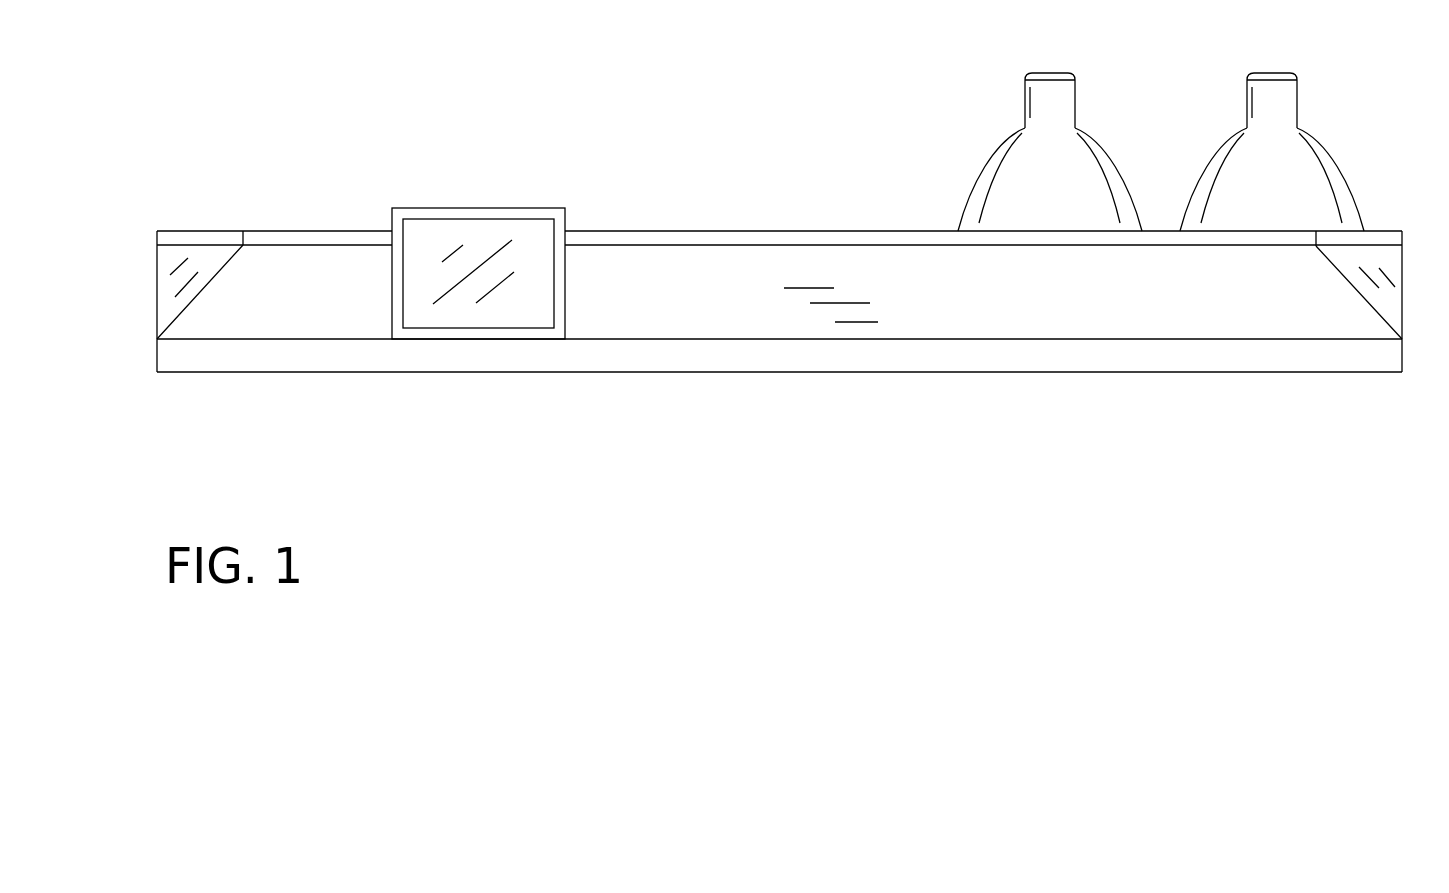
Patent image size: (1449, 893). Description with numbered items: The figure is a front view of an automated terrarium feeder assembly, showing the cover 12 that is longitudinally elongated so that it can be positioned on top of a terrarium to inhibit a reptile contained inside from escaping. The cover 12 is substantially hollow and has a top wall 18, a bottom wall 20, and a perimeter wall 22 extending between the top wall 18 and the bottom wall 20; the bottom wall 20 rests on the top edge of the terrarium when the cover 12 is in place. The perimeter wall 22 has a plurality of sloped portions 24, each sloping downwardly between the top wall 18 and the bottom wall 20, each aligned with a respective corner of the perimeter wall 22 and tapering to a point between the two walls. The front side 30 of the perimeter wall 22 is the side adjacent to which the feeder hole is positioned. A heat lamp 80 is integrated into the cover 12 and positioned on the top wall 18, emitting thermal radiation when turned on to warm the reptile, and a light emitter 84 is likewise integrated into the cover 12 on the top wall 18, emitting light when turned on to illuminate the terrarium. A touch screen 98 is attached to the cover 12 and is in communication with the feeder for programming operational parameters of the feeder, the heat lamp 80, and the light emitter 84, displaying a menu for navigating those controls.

The cover 12 is at (157, 231).
The top wall 18 is at (733, 231).
The bottom wall 20 is at (732, 371).
The perimeter wall 22 is at (612, 280).
The sloped portions 24 is at (209, 239).
The front side 30 is at (868, 285).
The heat lamp 80 is at (1118, 158).
The light emitter 84 is at (1328, 138).
The touch screen 98 is at (470, 243).